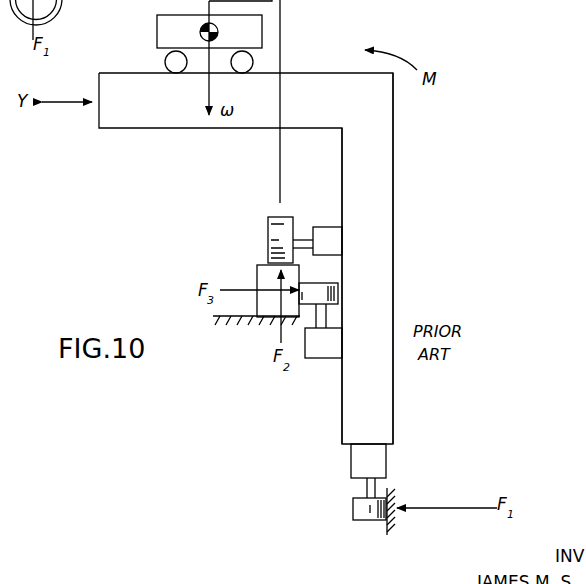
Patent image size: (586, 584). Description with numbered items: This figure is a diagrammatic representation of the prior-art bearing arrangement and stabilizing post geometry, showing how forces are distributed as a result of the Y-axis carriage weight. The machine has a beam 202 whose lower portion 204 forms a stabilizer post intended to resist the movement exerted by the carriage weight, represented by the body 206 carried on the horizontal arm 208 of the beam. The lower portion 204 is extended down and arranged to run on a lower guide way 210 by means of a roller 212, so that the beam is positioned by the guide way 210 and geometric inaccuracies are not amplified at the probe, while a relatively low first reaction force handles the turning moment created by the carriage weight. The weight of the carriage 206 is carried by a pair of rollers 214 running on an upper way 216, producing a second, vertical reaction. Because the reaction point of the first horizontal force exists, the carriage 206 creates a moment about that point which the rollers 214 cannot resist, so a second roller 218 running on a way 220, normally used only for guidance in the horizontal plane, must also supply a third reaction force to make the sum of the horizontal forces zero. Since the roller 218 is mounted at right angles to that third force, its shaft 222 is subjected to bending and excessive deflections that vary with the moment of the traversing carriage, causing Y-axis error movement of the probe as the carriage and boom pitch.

The beam 202 is at (397, 302).
The lower portion 204 is at (355, 428).
The body 206 is at (157, 32).
The horizontal beam 208 is at (162, 128).
The lower guide way 210 is at (386, 528).
The roller 212 is at (353, 507).
The rollers 214 is at (327, 226).
The upper way 216 is at (260, 265).
The second roller 218 is at (328, 314).
The way 220 is at (300, 275).
The shaft 222 is at (315, 318).